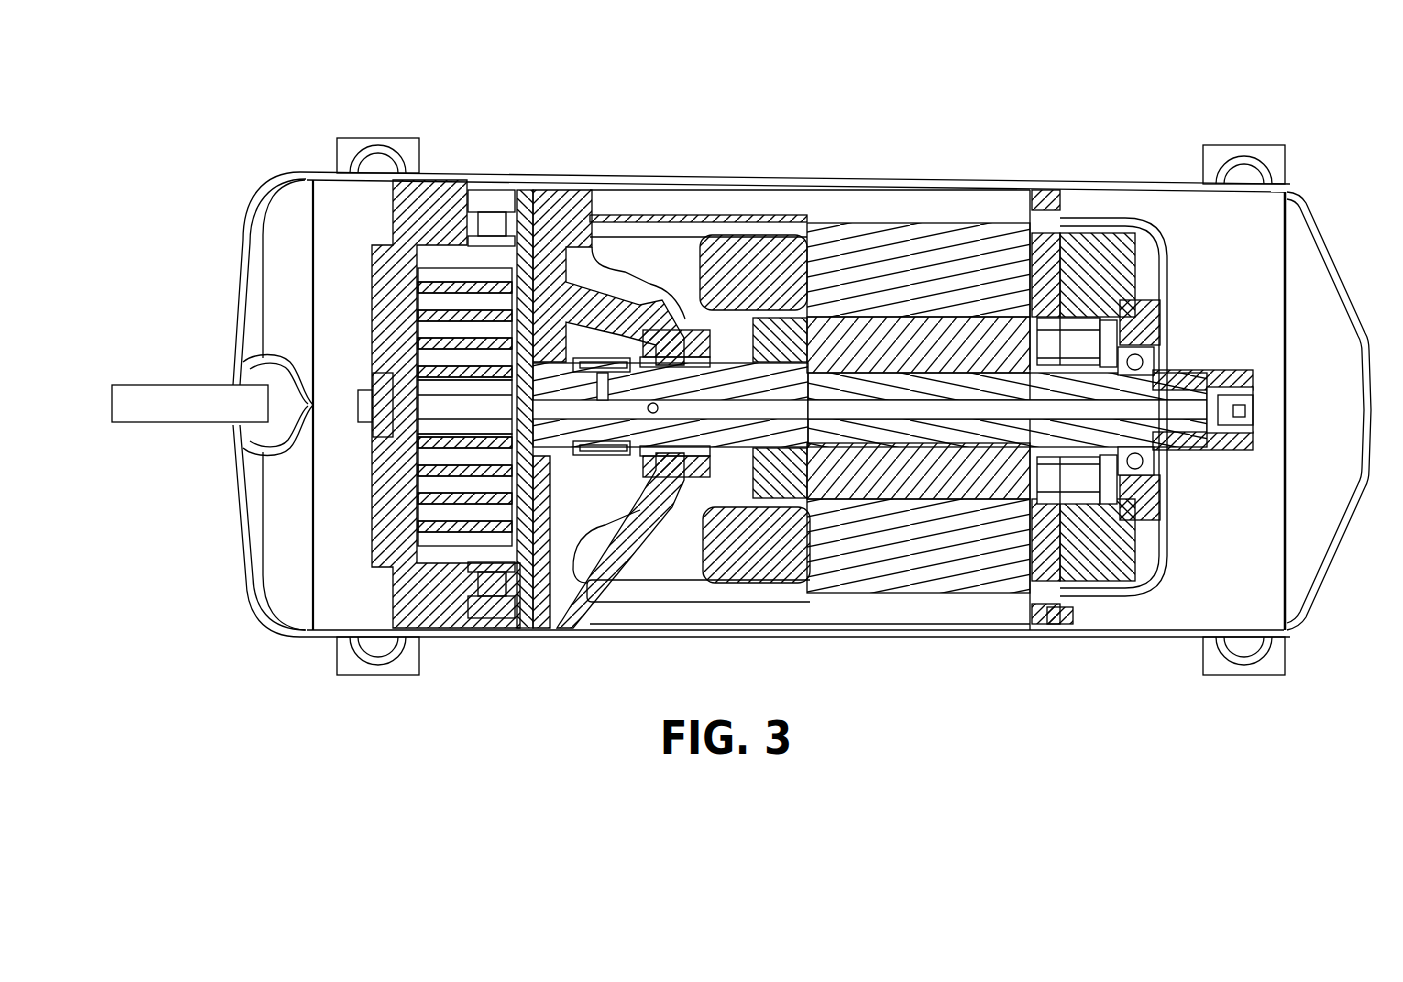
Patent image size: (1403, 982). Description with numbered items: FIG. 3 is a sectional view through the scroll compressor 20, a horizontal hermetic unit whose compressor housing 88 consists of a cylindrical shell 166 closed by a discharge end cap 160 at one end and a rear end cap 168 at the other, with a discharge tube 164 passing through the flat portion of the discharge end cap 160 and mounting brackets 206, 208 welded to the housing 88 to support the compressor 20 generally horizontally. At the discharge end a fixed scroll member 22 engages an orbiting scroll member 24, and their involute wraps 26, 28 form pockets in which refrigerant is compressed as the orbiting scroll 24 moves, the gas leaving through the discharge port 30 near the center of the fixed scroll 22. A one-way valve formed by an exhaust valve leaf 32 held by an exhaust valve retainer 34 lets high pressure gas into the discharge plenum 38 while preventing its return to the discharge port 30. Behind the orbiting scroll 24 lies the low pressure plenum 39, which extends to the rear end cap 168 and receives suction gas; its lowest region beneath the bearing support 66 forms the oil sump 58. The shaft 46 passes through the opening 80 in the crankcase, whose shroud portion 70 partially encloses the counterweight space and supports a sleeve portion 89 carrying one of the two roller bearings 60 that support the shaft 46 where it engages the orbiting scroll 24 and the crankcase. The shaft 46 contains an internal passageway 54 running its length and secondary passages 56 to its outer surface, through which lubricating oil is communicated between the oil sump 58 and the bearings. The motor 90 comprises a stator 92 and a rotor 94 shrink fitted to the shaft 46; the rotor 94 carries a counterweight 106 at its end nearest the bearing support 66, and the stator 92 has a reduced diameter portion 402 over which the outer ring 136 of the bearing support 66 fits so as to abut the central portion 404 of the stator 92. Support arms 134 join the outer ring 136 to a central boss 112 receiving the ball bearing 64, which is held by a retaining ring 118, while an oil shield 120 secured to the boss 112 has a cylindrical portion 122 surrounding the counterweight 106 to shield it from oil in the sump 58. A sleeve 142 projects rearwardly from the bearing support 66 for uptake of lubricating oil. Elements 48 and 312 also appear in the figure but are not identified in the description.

The scroll compressor 20 is at (248, 114).
The fixed scroll member 22 is at (427, 183).
The orbiting scroll member 24 is at (505, 632).
The involute wrap 26 is at (488, 255).
The involute wrap 28 is at (460, 320).
The discharge port 30 is at (360, 410).
The exhaust valve leaf 32 is at (336, 405).
The exhaust valve retainer 34 is at (347, 410).
The discharge plenum 38 is at (278, 282).
The low pressure plenum 39 is at (1209, 202).
The shaft 46 is at (925, 418).
The mounting plate 48 is at (560, 560).
The internal passageway 54 is at (950, 408).
The secondary passages 56 is at (657, 411).
The oil sump 58 is at (1222, 628).
The roller bearings 60 is at (675, 360).
The ball bearing 64 is at (1253, 417).
The bearing support 66 is at (1173, 530).
The shroud portion 70 is at (612, 265).
The opening 80 is at (545, 560).
The compressor housing 88 is at (795, 187).
The sleeve portion 89 is at (705, 560).
The motor 90 is at (972, 213).
The stator 92 is at (887, 433).
The rotor 94 is at (867, 333).
The counterweight 106 is at (1073, 300).
The central boss 112 is at (1133, 360).
The retaining ring 118 is at (1140, 462).
The oil shield 120 is at (1087, 325).
The cylindrical portion 122 is at (1093, 507).
The support arms 134 is at (1110, 227).
The outer ring 136 is at (1043, 637).
The sleeve 142 is at (1170, 368).
The discharge end cap 160 is at (243, 568).
The discharge tube 164 is at (170, 410).
The cylindrical shell 166 is at (752, 637).
The rear end cap 168 is at (1320, 612).
The mounting bracket 206 is at (350, 151).
The mounting bracket 208 is at (1270, 155).
The insulation 312 is at (722, 220).
The reduced diameter portion 402 is at (755, 240).
The central portion 404 is at (927, 230).